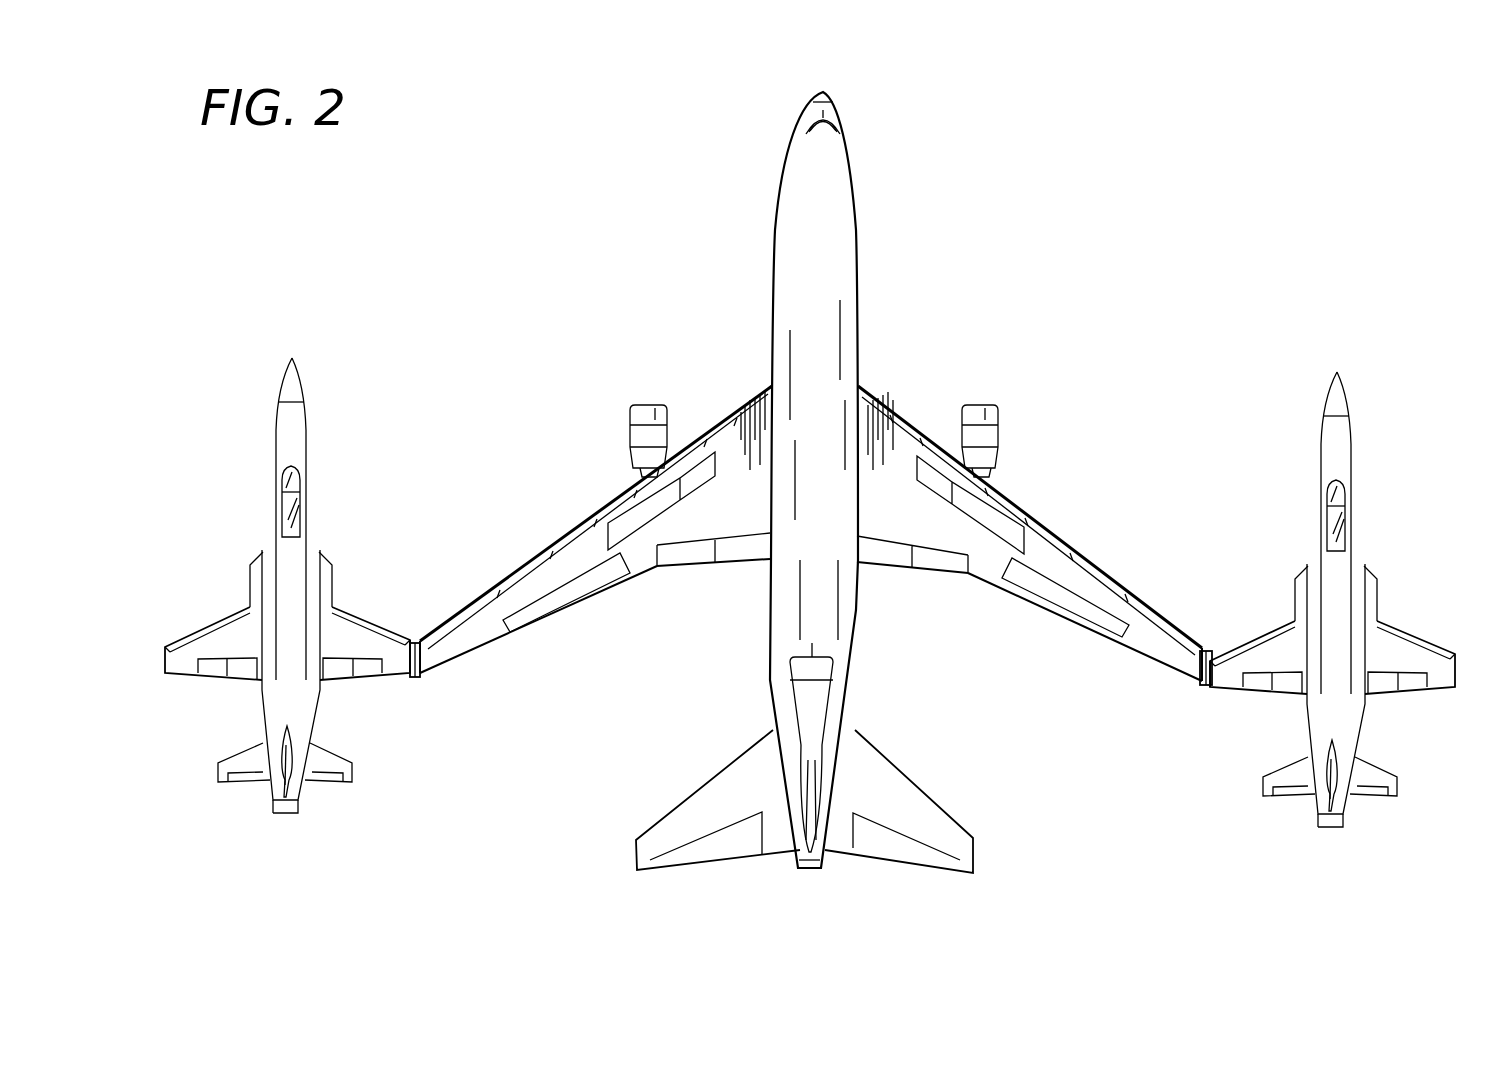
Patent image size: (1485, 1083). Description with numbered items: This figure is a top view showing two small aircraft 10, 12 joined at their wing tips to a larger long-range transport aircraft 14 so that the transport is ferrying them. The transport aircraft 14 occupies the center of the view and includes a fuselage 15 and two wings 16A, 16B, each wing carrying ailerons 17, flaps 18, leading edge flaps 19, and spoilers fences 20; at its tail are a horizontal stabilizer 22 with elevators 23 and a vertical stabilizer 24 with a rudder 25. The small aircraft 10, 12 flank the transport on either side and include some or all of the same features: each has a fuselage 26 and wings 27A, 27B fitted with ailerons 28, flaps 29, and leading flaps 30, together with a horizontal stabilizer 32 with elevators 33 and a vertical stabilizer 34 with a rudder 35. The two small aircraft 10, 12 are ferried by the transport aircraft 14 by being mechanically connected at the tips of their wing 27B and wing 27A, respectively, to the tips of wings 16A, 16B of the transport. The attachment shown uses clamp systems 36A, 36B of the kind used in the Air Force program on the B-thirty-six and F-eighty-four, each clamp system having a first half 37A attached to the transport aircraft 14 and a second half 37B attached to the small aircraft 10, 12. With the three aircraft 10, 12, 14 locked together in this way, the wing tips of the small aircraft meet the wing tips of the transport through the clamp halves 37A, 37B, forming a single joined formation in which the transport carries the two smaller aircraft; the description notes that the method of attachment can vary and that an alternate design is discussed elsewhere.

The first small aircraft 10 is at (308, 356).
The second small aircraft 12 is at (1353, 366).
The long-range transport aircraft 14 is at (858, 131).
The fuselage 15 is at (866, 240).
The wing 16A is at (740, 440).
The wing 16B is at (895, 440).
The ailerons 17 is at (545, 622).
The flaps 18 is at (730, 565).
The leading edge flaps 19 is at (576, 530).
The spoilers fences 20 is at (663, 498).
The horizontal stabilizer 22 is at (675, 805).
The elevators 23 is at (697, 850).
The vertical stabilizer 24 is at (806, 738).
The rudder 25 is at (822, 840).
The fuselage 26 is at (311, 430).
The wing 27A is at (234, 632).
The wing 27B is at (332, 620).
The ailerons 28 is at (210, 682).
The flaps 29 is at (245, 682).
The leading flaps 30 is at (182, 632).
The horizontal stabilizer 32 is at (222, 778).
The elevators 33 is at (242, 795).
The vertical stabilizer 34 is at (283, 745).
The rudder 35 is at (305, 790).
The clamp system 36A is at (417, 635).
The clamp system 36B is at (1205, 644).
The first half of clamp system 37A is at (445, 664).
The second half of clamp system 37B is at (400, 672).